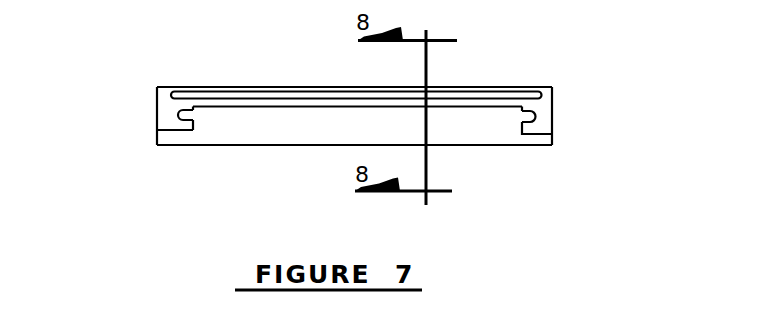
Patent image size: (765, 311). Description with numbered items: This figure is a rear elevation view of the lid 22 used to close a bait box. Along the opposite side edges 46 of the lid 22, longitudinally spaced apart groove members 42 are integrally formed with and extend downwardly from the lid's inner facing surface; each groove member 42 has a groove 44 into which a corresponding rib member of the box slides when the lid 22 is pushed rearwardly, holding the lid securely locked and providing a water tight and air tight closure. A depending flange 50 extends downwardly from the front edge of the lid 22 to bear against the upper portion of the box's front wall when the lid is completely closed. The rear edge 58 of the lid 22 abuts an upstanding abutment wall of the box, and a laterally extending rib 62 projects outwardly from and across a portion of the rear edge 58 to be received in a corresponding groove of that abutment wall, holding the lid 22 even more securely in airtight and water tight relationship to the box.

The lid 22 is at (401, 80).
The groove member 42 is at (122, 147).
The groove 44 is at (357, 152).
The side edge 46 is at (157, 114).
The depending flange 50 is at (402, 172).
The rear edge 58 is at (109, 107).
The laterally extending rib 62 is at (297, 55).